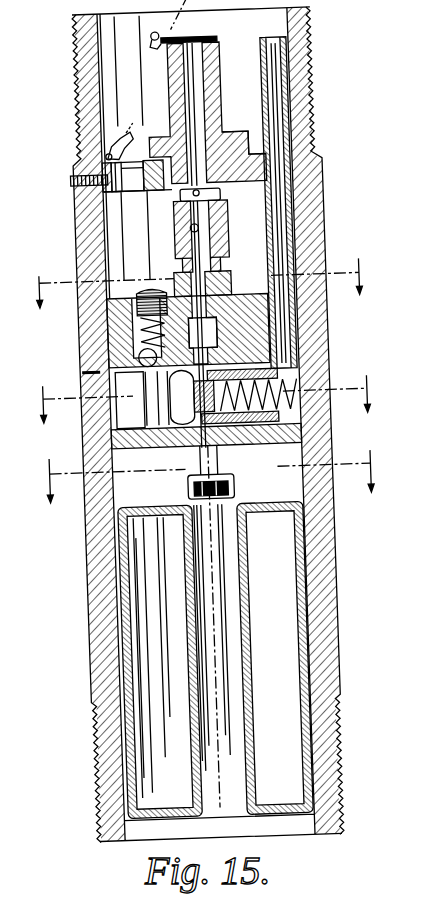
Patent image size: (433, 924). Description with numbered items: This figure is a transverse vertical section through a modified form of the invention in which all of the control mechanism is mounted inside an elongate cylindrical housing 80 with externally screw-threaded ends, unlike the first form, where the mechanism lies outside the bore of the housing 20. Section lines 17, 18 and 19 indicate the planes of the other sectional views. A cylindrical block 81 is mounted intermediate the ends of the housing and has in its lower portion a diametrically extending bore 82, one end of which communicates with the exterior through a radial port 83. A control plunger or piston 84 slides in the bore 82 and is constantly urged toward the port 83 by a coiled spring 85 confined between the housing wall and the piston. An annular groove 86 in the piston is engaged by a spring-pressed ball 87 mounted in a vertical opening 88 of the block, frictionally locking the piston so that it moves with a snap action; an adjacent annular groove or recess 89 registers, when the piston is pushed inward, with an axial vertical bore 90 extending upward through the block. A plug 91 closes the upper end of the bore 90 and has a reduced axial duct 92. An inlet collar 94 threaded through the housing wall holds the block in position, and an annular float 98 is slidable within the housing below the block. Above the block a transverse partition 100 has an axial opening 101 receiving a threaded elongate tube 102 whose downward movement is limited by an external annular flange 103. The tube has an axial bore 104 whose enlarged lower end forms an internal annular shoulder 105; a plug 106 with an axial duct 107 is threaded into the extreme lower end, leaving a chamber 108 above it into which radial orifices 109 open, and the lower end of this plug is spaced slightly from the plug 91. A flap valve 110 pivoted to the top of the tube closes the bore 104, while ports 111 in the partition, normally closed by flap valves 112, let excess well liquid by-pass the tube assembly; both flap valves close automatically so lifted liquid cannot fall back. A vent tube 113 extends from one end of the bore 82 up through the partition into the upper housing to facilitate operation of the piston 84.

The section line 17- 17 is at (207, 404).
The section line 18- 18 is at (204, 286).
The section line 19- 19 is at (208, 479).
The housing 20 is at (184, 282).
The elongate cylindrical housing 80 is at (303, 228).
The cylindrical block 81 is at (247, 325).
The diametrically extending bore 82 is at (320, 441).
The radial port 83 is at (75, 376).
The control plunger or piston 84 is at (85, 440).
The coiled spring 85 is at (268, 388).
The annular groove 86 is at (175, 470).
The spring-pressed ball 87 is at (127, 359).
The vertical opening 88 is at (122, 334).
The annular groove or recess 89 is at (175, 487).
The axial vertical bore 90 is at (246, 360).
The plug 91 is at (221, 272).
The reduced axial duct 92 is at (178, 285).
The inlet collar 94 is at (222, 917).
The annular float 98 is at (262, 658).
The transverse partition 100 is at (286, 146).
The axial opening 101 is at (160, 200).
The elongate tube 102 is at (168, 90).
The external annular flange 103 is at (158, 140).
The axial bore 104 is at (197, 69).
The internal annular shoulder 105 is at (228, 139).
The plug 106 is at (170, 250).
The axial duct 107 is at (183, 233).
The chamber 108 is at (248, 225).
The orifices 109 is at (172, 208).
The flap valve 110 is at (199, 40).
The ports 111 is at (88, 170).
The flap valves 112 is at (105, 143).
The vent tube 113 is at (277, 80).